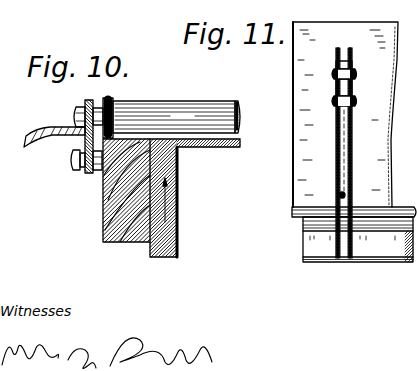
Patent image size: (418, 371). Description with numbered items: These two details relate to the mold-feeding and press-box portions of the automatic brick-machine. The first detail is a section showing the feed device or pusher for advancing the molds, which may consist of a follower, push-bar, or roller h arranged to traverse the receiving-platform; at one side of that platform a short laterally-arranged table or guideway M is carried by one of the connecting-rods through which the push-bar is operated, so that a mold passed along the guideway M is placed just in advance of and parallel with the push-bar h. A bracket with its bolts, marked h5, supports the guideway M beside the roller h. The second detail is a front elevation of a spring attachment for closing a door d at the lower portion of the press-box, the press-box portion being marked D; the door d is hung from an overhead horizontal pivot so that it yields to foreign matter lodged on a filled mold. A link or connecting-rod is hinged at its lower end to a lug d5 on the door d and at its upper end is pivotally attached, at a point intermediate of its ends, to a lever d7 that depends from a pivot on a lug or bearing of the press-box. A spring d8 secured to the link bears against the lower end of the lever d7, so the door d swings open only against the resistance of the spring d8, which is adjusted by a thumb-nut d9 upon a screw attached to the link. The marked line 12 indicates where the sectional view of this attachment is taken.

In FIG. 10, the table or guideway M is at (36, 129).
In FIG. 10, the roller h is at (166, 112).
In FIG. 10, the bracket plate with bolts h5 is at (76, 152).
In FIG. 11, the line 12 12 is at (378, 9).
In FIG. 11, the body casing D is at (345, 114).
In FIG. 11, the door d is at (354, 234).
In FIG. 11, the lug d5 is at (358, 247).
In FIG. 11, the lever d7 is at (352, 89).
In FIG. 11, the spring d8 is at (344, 153).
In FIG. 11, the thumb-nut d9 is at (346, 195).